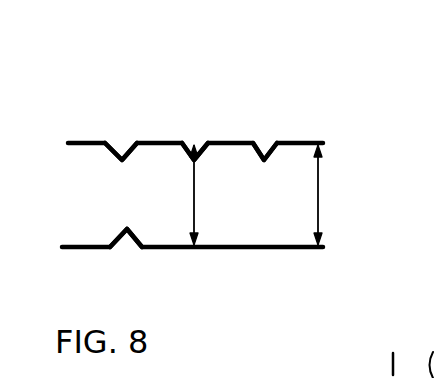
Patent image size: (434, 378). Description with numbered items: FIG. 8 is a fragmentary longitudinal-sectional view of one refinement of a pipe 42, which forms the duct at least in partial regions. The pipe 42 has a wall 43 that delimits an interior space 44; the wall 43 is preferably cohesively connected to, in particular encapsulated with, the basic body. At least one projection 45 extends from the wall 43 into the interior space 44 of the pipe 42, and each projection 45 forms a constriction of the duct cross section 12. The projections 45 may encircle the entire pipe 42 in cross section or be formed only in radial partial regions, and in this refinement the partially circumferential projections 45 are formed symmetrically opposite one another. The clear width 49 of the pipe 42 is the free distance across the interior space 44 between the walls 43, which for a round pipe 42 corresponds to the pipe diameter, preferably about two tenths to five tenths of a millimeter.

The duct cross section 12 is at (320, 192).
The pipe 42 is at (208, 155).
The wall 43 is at (306, 141).
The interior space 44 is at (281, 243).
The projection 45 is at (126, 227).
The clear width 49 is at (190, 196).